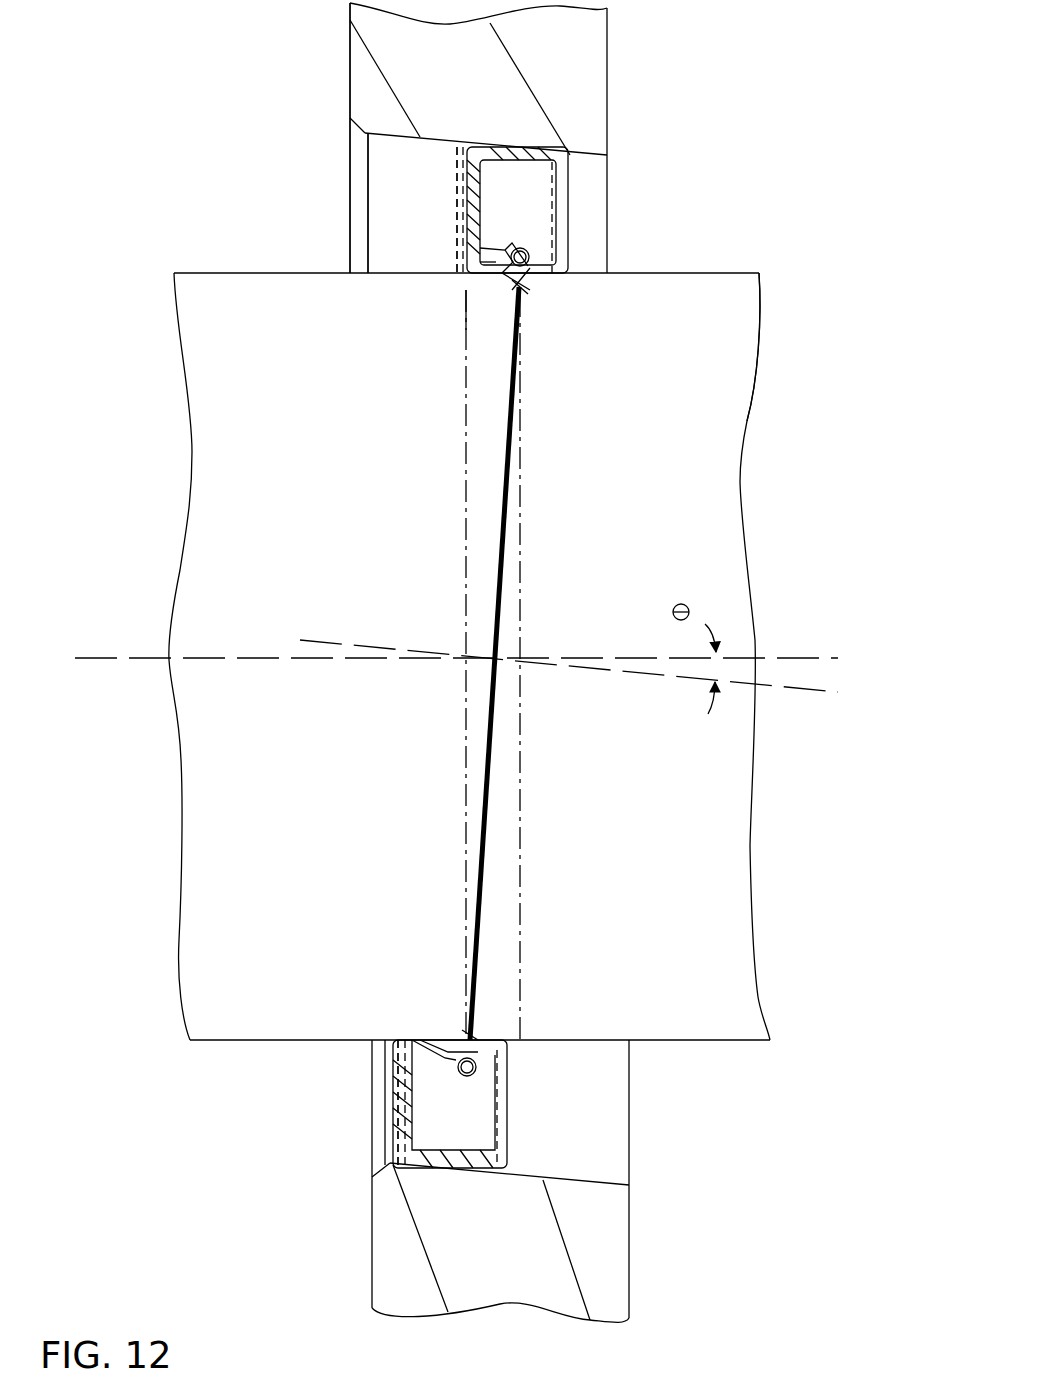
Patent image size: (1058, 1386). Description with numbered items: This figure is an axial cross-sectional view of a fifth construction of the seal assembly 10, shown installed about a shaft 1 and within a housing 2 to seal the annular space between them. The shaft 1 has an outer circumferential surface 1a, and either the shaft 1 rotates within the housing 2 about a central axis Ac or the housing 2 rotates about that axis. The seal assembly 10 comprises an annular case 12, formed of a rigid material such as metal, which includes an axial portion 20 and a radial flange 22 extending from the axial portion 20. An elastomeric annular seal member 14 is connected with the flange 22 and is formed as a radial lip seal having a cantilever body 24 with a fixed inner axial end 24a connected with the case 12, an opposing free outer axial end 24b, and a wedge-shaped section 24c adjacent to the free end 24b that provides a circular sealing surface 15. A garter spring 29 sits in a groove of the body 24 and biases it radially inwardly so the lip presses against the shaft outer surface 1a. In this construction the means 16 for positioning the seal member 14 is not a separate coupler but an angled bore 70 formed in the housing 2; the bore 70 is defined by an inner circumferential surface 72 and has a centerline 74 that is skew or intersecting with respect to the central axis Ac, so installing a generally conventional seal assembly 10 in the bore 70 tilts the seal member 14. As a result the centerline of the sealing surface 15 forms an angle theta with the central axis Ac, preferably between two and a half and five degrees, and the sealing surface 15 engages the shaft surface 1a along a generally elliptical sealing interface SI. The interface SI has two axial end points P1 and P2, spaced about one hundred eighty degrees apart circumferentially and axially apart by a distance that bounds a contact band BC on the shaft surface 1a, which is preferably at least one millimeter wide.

The shaft 1 is at (231, 275).
The outer circumferential surface 1a is at (734, 273).
The housing 2 is at (348, 70).
The seal assembly 10 is at (577, 184).
The annular case 12 is at (516, 175).
The annular seal member 14 is at (542, 232).
The sealing surface 15 is at (513, 290).
The means for positioning the seal member 16 is at (634, 97).
The axial portion 20 is at (566, 150).
The radial flange 22 is at (470, 206).
The cantilever body 24 is at (432, 1089).
The fixed inner axial end 24a is at (431, 1066).
The free outer axial end 24b is at (480, 1066).
The wedge-shaped section 24c is at (498, 1048).
The garter spring 29 is at (520, 247).
The angled bore 70 is at (398, 237).
The inner circumferential surface 72 is at (584, 1185).
The centerline 74 is at (810, 693).
The sealing interface SI is at (503, 549).
The contact band BC is at (488, 400).
The axial end point P1 is at (523, 284).
The axial end point P2 is at (470, 1038).
The central axis Ac is at (806, 656).
The angle theta is at (694, 659).